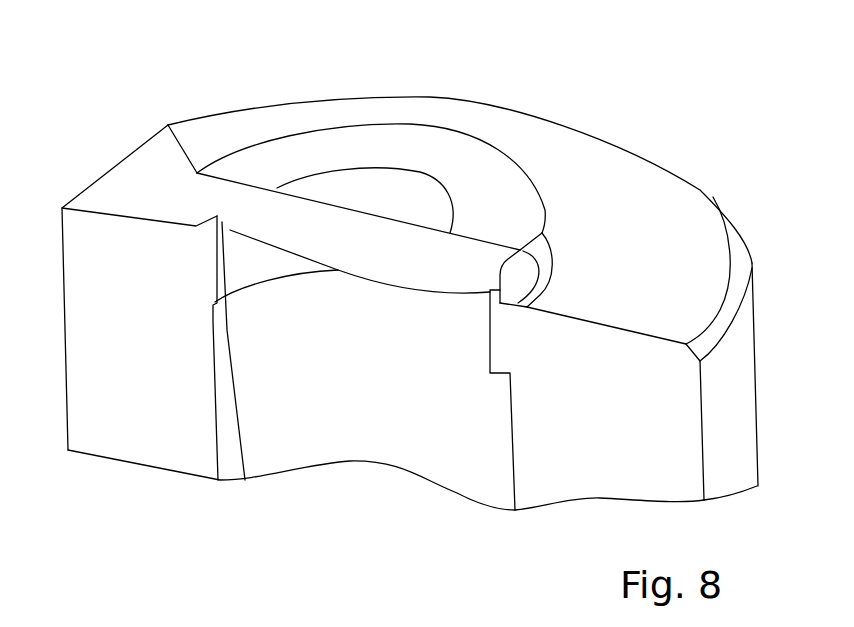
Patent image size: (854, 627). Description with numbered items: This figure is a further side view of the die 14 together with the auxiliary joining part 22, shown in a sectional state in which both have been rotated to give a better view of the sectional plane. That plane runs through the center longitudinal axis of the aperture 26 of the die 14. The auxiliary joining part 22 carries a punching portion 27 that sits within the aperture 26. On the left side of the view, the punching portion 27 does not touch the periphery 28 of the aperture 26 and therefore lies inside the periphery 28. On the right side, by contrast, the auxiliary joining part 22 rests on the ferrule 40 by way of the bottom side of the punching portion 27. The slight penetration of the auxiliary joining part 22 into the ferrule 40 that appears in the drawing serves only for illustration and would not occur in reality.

The die 14 is at (128, 157).
The auxiliary joining part 22 is at (316, 110).
The aperture 26 is at (320, 431).
The punching portion 27 is at (245, 480).
The periphery 28 is at (217, 238).
The ferrule 40 is at (522, 277).